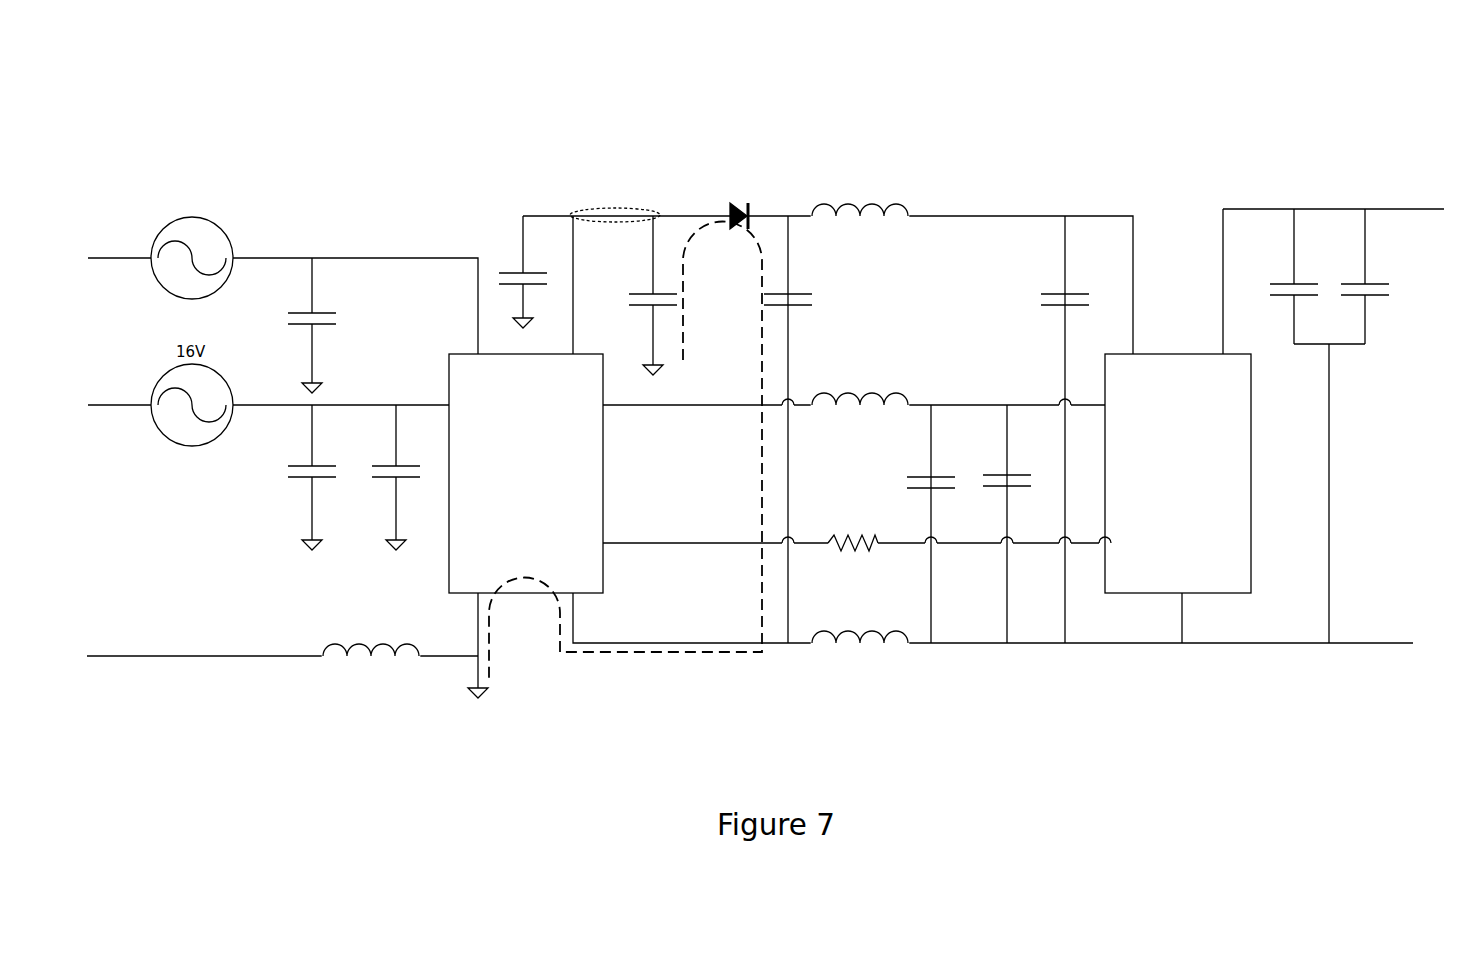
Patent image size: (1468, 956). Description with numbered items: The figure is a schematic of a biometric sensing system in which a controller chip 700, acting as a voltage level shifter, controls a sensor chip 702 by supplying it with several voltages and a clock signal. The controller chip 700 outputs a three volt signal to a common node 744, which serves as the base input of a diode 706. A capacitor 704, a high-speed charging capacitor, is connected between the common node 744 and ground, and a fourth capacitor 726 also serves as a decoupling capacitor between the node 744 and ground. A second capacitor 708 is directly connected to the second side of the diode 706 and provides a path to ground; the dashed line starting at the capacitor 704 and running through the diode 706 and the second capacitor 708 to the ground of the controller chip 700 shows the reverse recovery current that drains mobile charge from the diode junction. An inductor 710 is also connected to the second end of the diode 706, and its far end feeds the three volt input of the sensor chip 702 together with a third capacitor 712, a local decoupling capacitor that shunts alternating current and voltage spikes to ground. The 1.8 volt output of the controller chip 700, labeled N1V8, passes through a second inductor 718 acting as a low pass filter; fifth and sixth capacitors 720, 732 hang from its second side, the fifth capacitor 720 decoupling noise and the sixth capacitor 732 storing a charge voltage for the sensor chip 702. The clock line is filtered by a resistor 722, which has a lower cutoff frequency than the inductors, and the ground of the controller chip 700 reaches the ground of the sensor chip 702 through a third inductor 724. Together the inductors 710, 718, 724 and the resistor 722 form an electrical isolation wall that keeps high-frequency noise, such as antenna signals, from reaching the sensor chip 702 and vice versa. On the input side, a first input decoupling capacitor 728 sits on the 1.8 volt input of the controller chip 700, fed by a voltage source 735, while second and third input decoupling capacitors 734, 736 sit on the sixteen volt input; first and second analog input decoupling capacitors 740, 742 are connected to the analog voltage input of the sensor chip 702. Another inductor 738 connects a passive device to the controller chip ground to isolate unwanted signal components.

The controller chip 700 is at (526, 473).
The sensor chip 702 is at (1178, 473).
The capacitor 704 is at (639, 295).
The diode 706 is at (717, 202).
The second capacitor 708 is at (801, 283).
The inductor 710 is at (860, 196).
The third capacitor 712 is at (1050, 283).
The second inductor 718 is at (860, 384).
The fifth capacitor 720 is at (916, 468).
The resistor 722 is at (853, 522).
The third inductor 724 is at (860, 625).
The fourth capacitor 726 is at (509, 272).
The first input decoupling capacitor 728 is at (298, 325).
The sixth capacitor 732 is at (992, 467).
The second input decoupling capacitor 734 is at (297, 477).
The 1.8V voltage source 735 is at (174, 247).
The third input decoupling capacitor 736 is at (382, 477).
The inductor 738 is at (371, 668).
The first analog input decoupling capacitor 740 is at (1279, 276).
The second analog input decoupling capacitor 742 is at (1349, 276).
The common node 744 is at (628, 209).